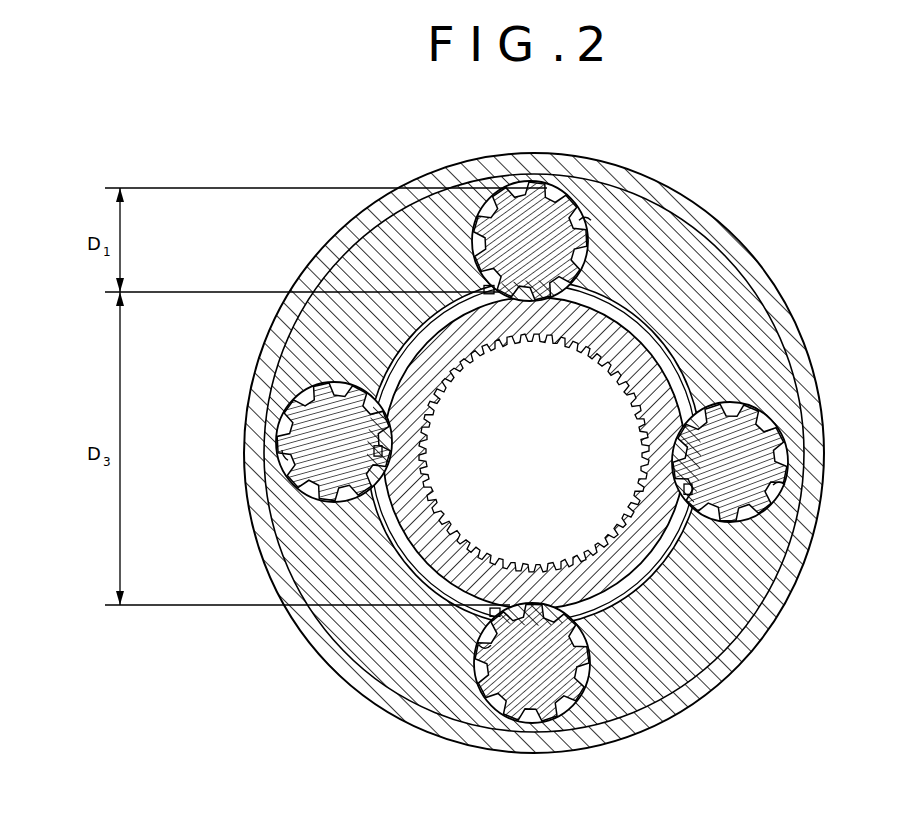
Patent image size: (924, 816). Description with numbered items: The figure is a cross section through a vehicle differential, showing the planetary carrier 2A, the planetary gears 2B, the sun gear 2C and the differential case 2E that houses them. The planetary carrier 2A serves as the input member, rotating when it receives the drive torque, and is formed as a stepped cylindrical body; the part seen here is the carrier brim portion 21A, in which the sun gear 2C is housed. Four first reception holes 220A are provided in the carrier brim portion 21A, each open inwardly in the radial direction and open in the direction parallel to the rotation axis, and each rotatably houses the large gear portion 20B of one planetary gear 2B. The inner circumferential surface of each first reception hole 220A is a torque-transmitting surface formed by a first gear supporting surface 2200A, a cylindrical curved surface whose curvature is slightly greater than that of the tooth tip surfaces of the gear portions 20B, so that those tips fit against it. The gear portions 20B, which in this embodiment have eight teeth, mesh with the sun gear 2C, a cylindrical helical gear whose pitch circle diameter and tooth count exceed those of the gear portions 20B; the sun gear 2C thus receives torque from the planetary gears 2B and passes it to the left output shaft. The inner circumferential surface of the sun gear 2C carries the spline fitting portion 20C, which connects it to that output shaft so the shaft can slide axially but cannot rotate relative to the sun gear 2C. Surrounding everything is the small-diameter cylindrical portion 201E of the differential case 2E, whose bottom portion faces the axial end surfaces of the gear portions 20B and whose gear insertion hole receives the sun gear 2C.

The planetary carrier 2A is at (337, 652).
The planetary gear 2B is at (548, 186).
The sun gear 2C is at (637, 351).
The differential case 2E is at (757, 236).
The gear portion 20B is at (578, 205).
The spline fitting portion 20C is at (458, 378).
The carrier brim portion 21A is at (327, 277).
The small-diameter cylindrical portion 201E is at (735, 652).
The first reception hole 220A is at (594, 211).
The first gear supporting surface 2200A is at (482, 246).